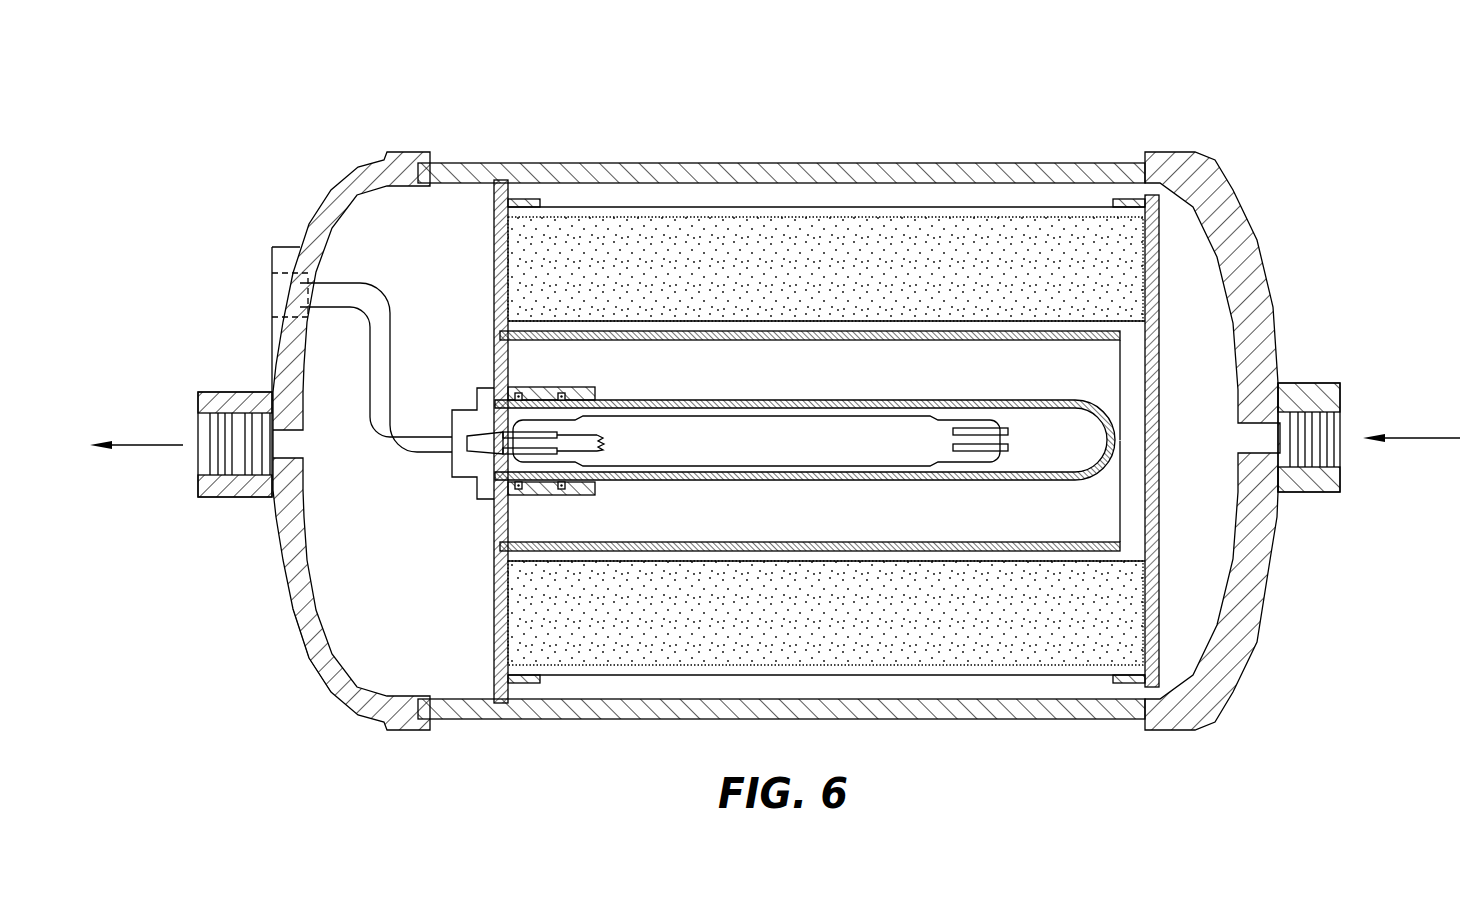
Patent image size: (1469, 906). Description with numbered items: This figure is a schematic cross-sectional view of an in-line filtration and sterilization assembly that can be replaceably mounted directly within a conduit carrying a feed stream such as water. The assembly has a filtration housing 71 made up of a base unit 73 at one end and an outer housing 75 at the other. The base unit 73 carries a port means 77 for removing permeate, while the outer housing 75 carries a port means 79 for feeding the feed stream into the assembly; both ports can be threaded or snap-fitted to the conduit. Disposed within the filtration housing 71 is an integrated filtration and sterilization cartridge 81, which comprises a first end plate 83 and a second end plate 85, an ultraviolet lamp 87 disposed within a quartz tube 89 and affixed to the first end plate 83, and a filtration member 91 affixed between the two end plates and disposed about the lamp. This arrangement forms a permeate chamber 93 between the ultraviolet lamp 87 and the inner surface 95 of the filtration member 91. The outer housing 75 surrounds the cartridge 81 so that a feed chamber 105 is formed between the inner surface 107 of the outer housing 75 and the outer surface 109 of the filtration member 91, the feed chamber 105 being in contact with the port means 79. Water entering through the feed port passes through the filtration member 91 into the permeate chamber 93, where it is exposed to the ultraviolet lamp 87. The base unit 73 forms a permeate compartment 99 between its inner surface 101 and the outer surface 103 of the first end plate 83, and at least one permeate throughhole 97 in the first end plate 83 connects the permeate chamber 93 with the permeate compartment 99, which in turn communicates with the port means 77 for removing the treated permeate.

The filtration housing 71 is at (614, 114).
The base unit 73 is at (315, 662).
The outer housing 75 is at (1087, 163).
The port means 77 is at (290, 448).
The port means 79 is at (1255, 440).
The integrated filtration and sterilization cartridge 81 is at (829, 195).
The first end plate 83 is at (497, 315).
The second end plate 85 is at (1160, 355).
The ultraviolet lamp 87 is at (865, 413).
The quartz tube 89 is at (997, 398).
The filtration member 91 is at (975, 220).
The permeate chamber 93 is at (1140, 499).
The inner surface 95 is at (1130, 562).
The permeate throughhole 97 is at (492, 522).
The permeate compartment 99 is at (378, 547).
The inner surface 101 is at (340, 629).
The outer surface 103 is at (480, 259).
The feed chamber 105 is at (567, 197).
The inner surface 107 is at (687, 177).
The outer surface 109 is at (897, 205).